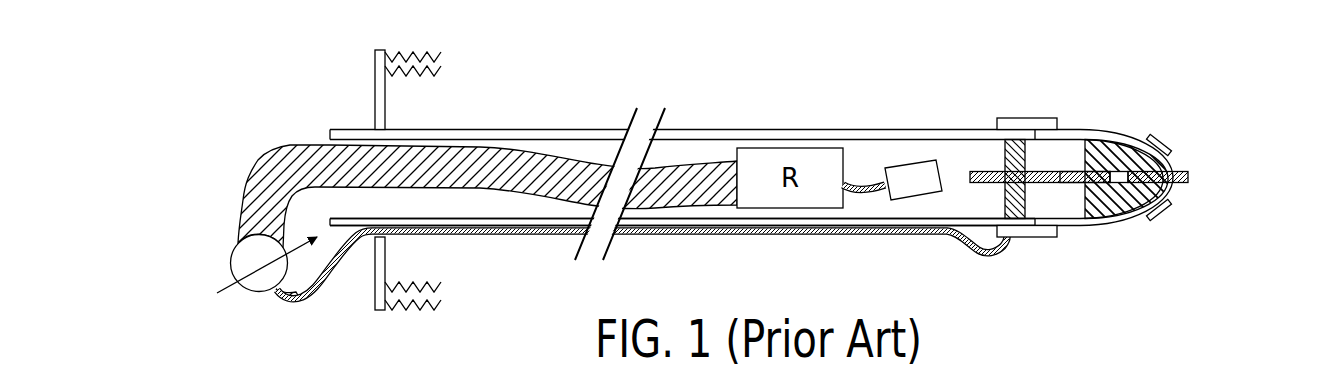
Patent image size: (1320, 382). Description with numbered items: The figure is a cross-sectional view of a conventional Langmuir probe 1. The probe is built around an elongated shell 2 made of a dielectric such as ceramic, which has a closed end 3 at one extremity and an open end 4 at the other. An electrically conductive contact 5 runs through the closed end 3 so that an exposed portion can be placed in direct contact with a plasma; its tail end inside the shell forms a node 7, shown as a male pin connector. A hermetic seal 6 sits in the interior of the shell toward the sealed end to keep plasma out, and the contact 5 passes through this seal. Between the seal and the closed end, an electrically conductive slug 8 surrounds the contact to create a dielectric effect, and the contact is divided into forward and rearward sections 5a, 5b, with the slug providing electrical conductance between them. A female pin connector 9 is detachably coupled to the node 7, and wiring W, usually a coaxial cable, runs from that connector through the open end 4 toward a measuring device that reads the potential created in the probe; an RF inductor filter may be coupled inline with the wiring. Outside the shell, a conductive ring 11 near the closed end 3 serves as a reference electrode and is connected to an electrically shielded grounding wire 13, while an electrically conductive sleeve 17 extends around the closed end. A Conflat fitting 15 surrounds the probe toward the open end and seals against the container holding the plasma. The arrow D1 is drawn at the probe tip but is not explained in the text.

The Langmuir probe 1 is at (731, 78).
The elongated shell 2 is at (533, 226).
The closed end 3 is at (1180, 192).
The open end 4 is at (375, 212).
The electrically conductive contact 5 is at (1190, 178).
The forward section of the contact 5a is at (1161, 152).
The rearward section of the contact 5b is at (1071, 170).
The hermetic seal 6 is at (1012, 139).
The node 7 is at (975, 170).
The electrically conductive slug 8 is at (1128, 160).
The female pin connector 9 is at (912, 170).
The conductive ring 11 is at (1030, 238).
The electrically shielded grounding wire 13 is at (474, 236).
The Conflat fitting 15 is at (375, 85).
The electrically conductive sleeve 17 is at (1165, 211).
The wiring W is at (535, 149).
The direction of movement D1 is at (251, 263).